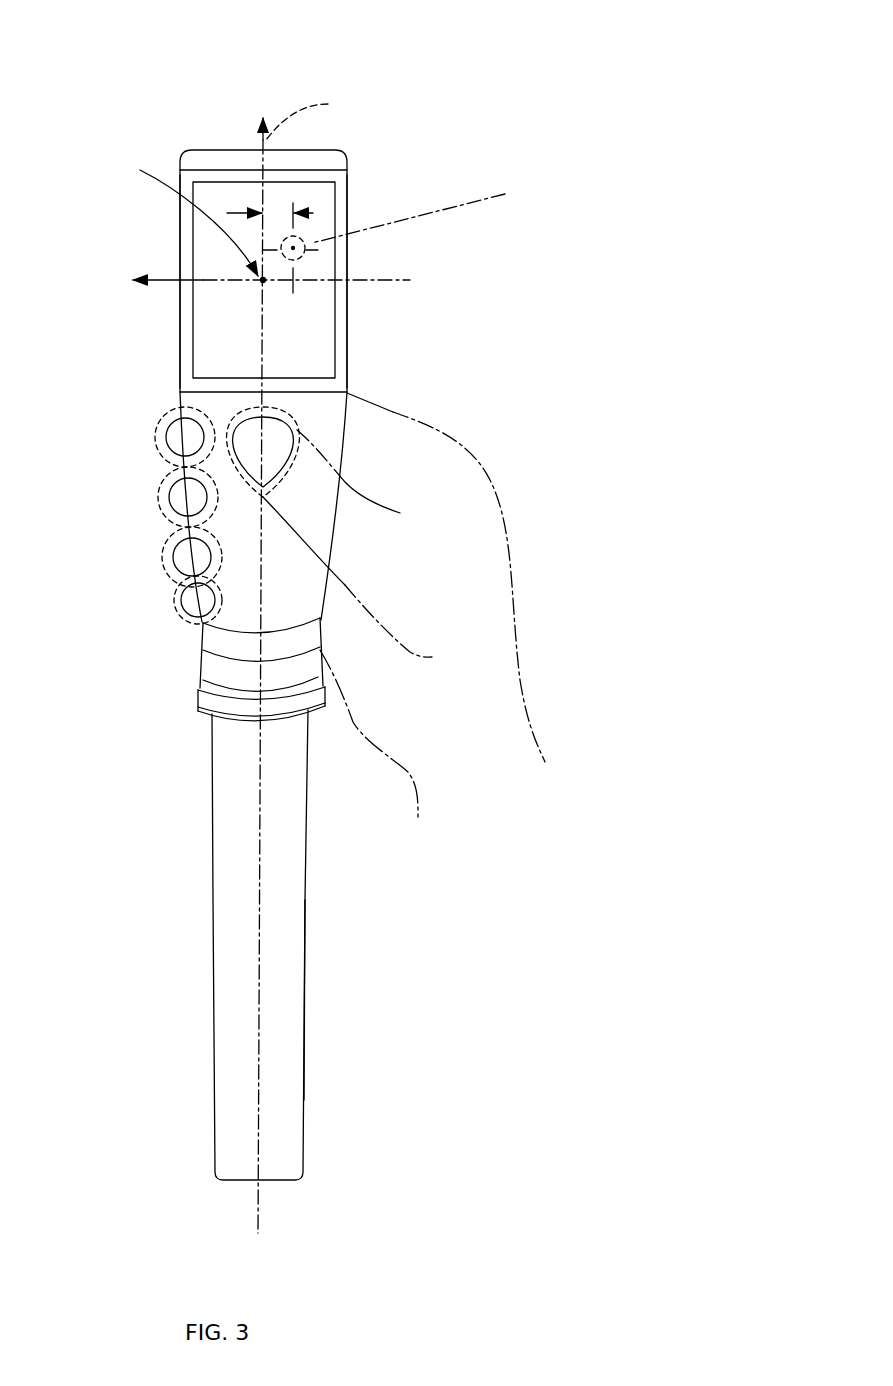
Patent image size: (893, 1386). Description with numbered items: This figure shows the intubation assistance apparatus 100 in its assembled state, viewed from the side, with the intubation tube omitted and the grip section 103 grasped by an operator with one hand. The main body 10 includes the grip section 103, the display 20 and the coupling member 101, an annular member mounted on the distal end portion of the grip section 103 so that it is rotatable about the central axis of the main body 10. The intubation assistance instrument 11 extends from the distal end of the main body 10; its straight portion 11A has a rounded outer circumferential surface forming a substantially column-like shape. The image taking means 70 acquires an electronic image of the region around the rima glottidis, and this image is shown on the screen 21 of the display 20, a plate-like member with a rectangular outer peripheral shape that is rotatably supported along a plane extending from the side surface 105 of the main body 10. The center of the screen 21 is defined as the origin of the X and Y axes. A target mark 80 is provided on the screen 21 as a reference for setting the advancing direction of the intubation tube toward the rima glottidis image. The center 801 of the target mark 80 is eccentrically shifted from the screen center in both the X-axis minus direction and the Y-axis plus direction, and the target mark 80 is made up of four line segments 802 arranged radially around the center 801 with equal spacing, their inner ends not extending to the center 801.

The intubation assistance apparatus 100 is at (466, 92).
The main body 10 is at (349, 430).
The intubation assistance instrument 11 is at (309, 886).
The straight portion 11A is at (283, 987).
The display 20 is at (351, 207).
The screen 21 is at (310, 334).
The image taking means 70 is at (243, 523).
The target mark 80 is at (311, 214).
The center of the target mark 801 is at (300, 257).
The line segments 802 is at (307, 239).
The coupling member 101 is at (224, 670).
The grip section 103 is at (150, 400).
The side surface 105 is at (180, 238).